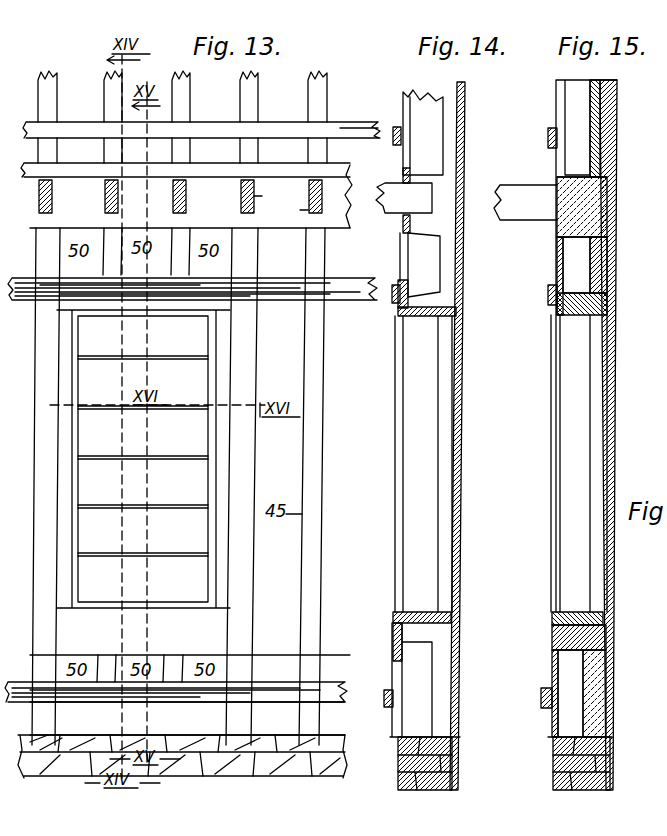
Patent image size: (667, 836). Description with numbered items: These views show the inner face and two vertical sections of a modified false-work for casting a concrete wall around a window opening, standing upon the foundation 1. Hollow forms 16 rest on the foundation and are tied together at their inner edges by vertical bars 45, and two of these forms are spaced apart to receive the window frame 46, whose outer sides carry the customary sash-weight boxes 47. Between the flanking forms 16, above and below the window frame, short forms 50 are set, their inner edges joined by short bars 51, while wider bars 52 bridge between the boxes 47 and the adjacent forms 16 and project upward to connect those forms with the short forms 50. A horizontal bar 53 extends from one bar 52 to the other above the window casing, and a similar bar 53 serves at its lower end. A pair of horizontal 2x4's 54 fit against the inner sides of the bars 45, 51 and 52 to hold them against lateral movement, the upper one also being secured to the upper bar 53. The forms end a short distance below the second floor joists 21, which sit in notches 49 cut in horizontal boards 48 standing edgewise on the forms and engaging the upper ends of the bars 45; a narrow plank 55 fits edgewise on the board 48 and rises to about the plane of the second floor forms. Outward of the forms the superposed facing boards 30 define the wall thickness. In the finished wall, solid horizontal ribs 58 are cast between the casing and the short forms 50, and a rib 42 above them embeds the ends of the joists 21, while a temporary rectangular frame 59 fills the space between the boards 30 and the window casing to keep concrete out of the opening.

In FIG. 13, the foundation 1 is at (2, 769).
In FIG. 14, the foundation 1 is at (398, 770).
In FIG. 15, the foundation 1 is at (585, 770).
In FIG. 13, the hollow forms 16 is at (279, 471).
In FIG. 14, the hollow forms 16 is at (423, 123).
In FIG. 15, the hollow forms 16 is at (568, 82).
In FIG. 13, the second floor joists 21 is at (170, 197).
In FIG. 14, the second floor joists 21 is at (404, 198).
In FIG. 15, the second floor joists 21 is at (525, 202).
In FIG. 13, the horizontally-arranged boards 30 is at (143, 459).
In FIG. 14, the horizontally-arranged boards 30 is at (457, 436).
In FIG. 15, the horizontally-arranged boards 30 is at (614, 438).
In FIG. 14, the rib 42 is at (427, 183).
In FIG. 15, the rib 42 is at (597, 186).
In FIG. 13, the vertical bars 45 is at (240, 104).
In FIG. 13, the window frame 46 is at (208, 484).
In FIG. 14, the window frame 46 is at (418, 381).
In FIG. 15, the window frame 46 is at (578, 371).
In FIG. 13, the sash-weight boxes 47 is at (64, 528).
In FIG. 13, the horizontal boards 48 is at (300, 212).
In FIG. 14, the horizontal boards 48 is at (412, 232).
In FIG. 15, the horizontal boards 48 is at (567, 213).
In FIG. 13, the notches 49 is at (308, 195).
In FIG. 14, the notches 49 is at (412, 220).
In FIG. 14, the short forms 50 is at (425, 485).
In FIG. 15, the short forms 50 is at (636, 670).
In FIG. 13, the short bars 51 is at (178, 264).
In FIG. 13, the bars 52 is at (45, 528).
In FIG. 14, the bars 52 is at (398, 515).
In FIG. 15, the bars 52 is at (560, 462).
In FIG. 13, the horizontal bar 53 is at (64, 304).
In FIG. 14, the horizontal bar 53 is at (397, 318).
In FIG. 15, the horizontal bar 53 is at (560, 318).
In FIG. 13, the 2x4's 54 is at (338, 130).
In FIG. 14, the 2x4's 54 is at (397, 127).
In FIG. 15, the 2x4's 54 is at (551, 128).
In FIG. 13, the narrow plank 55 is at (200, 175).
In FIG. 14, the narrow plank 55 is at (407, 172).
In FIG. 15, the narrow plank 55 is at (566, 173).
In FIG. 14, the horizontal ribs 58 is at (424, 470).
In FIG. 15, the horizontal ribs 58 is at (592, 299).
In FIG. 14, the rectangular frame 59 is at (440, 440).
In FIG. 15, the rectangular frame 59 is at (597, 432).